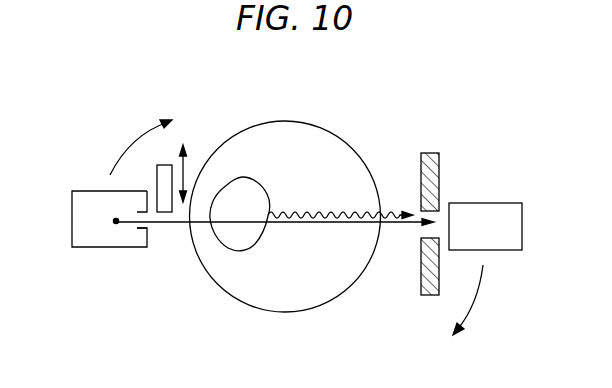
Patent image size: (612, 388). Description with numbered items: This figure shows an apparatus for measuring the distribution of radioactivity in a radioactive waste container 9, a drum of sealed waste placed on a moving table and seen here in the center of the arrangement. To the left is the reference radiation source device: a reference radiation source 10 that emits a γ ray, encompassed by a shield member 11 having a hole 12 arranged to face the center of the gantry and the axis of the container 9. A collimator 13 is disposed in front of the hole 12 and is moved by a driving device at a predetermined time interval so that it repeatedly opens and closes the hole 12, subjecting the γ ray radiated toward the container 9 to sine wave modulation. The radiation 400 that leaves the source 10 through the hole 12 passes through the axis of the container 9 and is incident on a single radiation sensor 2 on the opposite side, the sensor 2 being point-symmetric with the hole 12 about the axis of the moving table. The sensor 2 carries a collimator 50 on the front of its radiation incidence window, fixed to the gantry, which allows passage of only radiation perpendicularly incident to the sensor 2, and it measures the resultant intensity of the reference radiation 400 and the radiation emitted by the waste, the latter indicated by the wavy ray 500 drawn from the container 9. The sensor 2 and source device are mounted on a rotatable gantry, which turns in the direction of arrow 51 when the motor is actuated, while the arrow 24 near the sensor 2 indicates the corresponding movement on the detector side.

The radiation sensor 2 is at (514, 224).
The radioactive waste container 9 is at (244, 130).
The reference radiation source 10 is at (116, 223).
The shield member 11 is at (72, 222).
The hole 12 is at (140, 232).
The collimator 13 is at (158, 179).
The rotation direction arrow 24 is at (480, 286).
The collimator 50 is at (421, 172).
The arrow 51 is at (140, 136).
The radiation (γ ray) 400 is at (305, 224).
The X-ray 500 is at (354, 212).